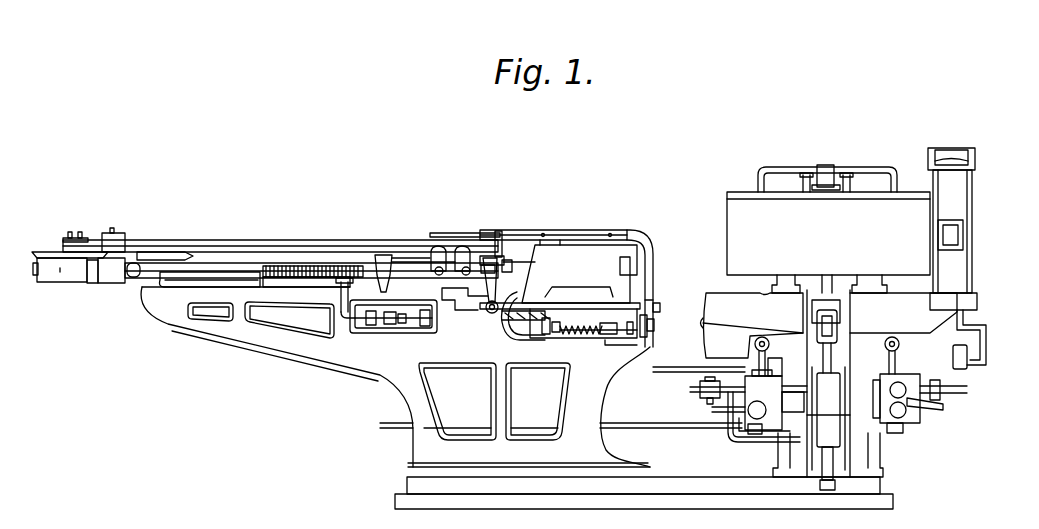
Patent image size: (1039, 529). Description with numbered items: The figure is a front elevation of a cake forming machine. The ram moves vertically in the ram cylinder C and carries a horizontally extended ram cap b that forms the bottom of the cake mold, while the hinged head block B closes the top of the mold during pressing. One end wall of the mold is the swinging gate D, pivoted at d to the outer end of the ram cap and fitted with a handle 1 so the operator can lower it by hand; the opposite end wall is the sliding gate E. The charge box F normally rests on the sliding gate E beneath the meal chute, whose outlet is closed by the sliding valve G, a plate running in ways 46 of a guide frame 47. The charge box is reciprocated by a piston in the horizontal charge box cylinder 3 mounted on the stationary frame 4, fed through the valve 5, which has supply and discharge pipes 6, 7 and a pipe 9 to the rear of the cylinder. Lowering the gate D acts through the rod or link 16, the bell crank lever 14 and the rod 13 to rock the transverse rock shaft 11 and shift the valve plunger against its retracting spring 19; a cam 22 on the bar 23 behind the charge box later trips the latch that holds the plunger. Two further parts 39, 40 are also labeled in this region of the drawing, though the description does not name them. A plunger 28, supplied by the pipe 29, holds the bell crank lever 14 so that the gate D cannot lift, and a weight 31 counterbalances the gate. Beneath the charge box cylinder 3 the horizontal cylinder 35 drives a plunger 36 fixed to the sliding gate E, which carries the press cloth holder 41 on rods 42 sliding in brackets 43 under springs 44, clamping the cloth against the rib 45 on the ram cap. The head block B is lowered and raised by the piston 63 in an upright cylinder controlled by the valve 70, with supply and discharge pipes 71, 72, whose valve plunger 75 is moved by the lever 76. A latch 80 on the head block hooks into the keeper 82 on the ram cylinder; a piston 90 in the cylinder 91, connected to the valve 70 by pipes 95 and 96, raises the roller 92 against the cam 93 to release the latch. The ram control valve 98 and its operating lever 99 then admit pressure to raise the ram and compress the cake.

The handle 1 is at (956, 155).
The charge box cylinder 3 is at (218, 272).
The stationary frame 4 is at (260, 342).
The valve 5 is at (441, 246).
The supply pipe 6 is at (466, 274).
The discharge pipe 7 is at (438, 272).
The pipe 9 is at (195, 274).
The transverse rock shaft 11 is at (490, 313).
The rod 13 is at (666, 369).
The bell crank lever 14 is at (913, 400).
The rod or link 16 is at (935, 362).
The retracting spring 19 is at (292, 268).
The cam 22 is at (82, 258).
The bar 23 is at (256, 257).
The plunger 28 is at (873, 424).
The pipe 29 is at (335, 327).
The weight 31 is at (968, 365).
The horizontal cylinder 35 is at (437, 304).
The plunger 36 is at (540, 303).
The plate 39 is at (532, 298).
The cam 40 is at (512, 322).
The press cloth holder 41 is at (654, 328).
The rods 42 is at (617, 332).
The brackets 43 is at (622, 336).
The springs 44 is at (583, 322).
The rib 45 is at (752, 325).
The ways 46 is at (624, 236).
The guide frame 47 is at (653, 272).
The piston 63 is at (827, 273).
The valve 70 is at (757, 382).
The liquid supply pipe 71 is at (690, 390).
The discharge pipe 72 is at (712, 410).
The valve plunger 75 is at (778, 364).
The lever 76 is at (765, 339).
The latch 80 is at (830, 165).
The keeper 82 is at (841, 343).
The piston 90 is at (826, 355).
The cylinder 91 is at (838, 397).
The roller 92 is at (820, 323).
The cam 93 is at (822, 190).
The pipe 95 is at (800, 440).
The pipe 96 is at (750, 438).
The ram control valve 98 is at (900, 430).
The operating lever 99 is at (895, 340).
The head block B is at (828, 242).
The ram cylinder C is at (852, 360).
The swinging gate D is at (960, 218).
The sliding gate E is at (654, 310).
The charge box F is at (580, 269).
The sliding valve G is at (480, 258).
The ram cap b is at (856, 358).
The pivot d is at (977, 302).